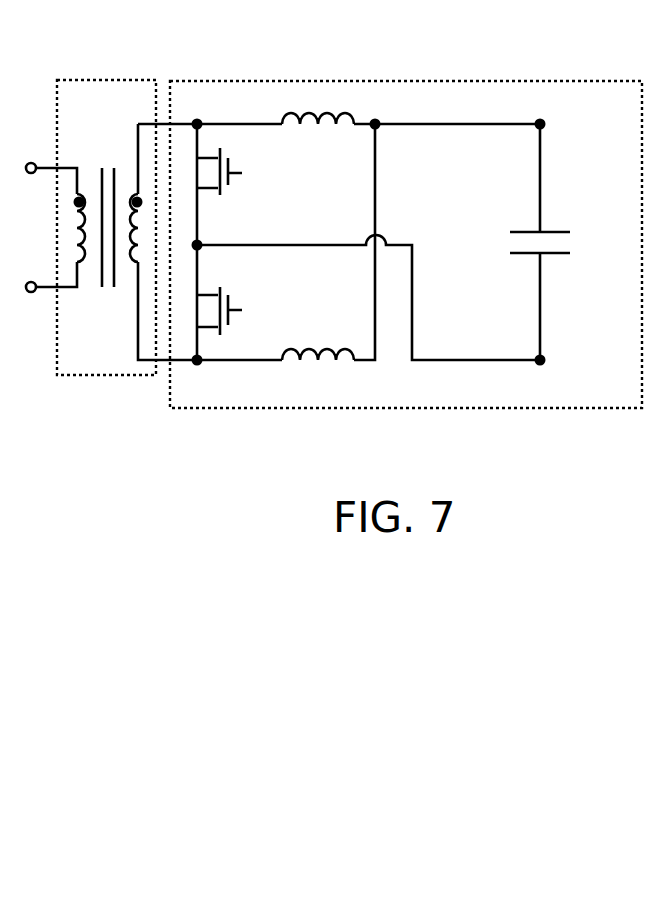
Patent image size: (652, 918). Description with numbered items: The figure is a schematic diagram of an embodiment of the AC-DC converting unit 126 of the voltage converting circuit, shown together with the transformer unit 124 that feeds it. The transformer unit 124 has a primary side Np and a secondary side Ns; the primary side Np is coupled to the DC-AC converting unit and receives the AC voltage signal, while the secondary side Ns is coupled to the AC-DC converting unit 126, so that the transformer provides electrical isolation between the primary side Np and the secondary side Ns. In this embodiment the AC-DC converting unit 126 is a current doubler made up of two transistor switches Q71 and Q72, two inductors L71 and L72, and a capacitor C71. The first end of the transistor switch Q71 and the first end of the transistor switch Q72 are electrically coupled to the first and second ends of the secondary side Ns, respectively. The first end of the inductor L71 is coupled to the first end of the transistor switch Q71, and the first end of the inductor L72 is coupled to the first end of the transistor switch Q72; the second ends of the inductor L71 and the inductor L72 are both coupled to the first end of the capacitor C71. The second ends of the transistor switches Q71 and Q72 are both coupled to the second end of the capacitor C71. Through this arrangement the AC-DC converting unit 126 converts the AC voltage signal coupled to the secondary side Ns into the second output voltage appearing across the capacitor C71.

The transformer unit 124 is at (148, 81).
The AC-DC converting unit 126 is at (490, 80).
The primary side Np is at (81, 195).
The secondary side Ns is at (138, 179).
The transistor switch Q71 is at (240, 174).
The transistor switch Q72 is at (240, 313).
The inductor L71 is at (321, 136).
The inductor L72 is at (321, 373).
The capacitor C71 is at (552, 242).